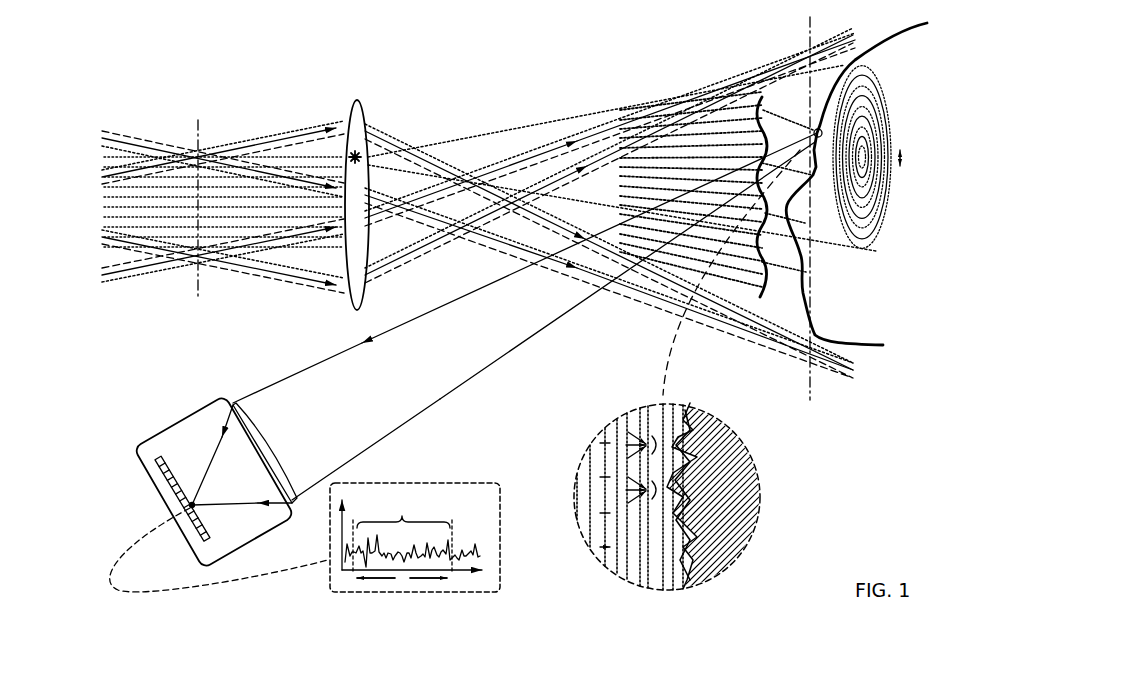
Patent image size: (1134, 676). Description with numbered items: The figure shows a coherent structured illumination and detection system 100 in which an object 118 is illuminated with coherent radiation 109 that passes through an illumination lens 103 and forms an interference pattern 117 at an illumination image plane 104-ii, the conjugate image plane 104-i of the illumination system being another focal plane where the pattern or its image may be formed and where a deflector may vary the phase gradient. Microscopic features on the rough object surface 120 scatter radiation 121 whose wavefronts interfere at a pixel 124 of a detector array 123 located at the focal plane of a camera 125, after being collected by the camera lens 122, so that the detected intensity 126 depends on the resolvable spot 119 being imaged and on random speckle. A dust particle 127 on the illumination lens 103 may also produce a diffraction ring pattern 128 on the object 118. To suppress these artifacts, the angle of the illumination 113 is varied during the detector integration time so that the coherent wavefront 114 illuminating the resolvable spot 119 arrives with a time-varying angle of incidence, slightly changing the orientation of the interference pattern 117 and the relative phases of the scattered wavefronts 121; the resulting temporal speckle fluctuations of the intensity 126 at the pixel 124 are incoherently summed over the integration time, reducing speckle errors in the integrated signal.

The coherent structured illumination and detection system 100 is at (563, 60).
The illumination lens 103 is at (355, 100).
The conjugate image plane 104-i is at (198, 300).
The illumination image plane 104-ii is at (810, 400).
The coherent radiation 109 is at (132, 142).
The angle of the illumination 113 is at (734, 100).
The coherent wavefront 114 is at (594, 443).
The interference pattern 117 is at (765, 280).
The object 118 is at (863, 317).
The resolvable spot 119 is at (815, 130).
The object surface 120 is at (927, 23).
The scattered radiation 121 is at (440, 400).
The camera lens 122 is at (233, 402).
The detector array 123 is at (163, 450).
The pixel 124 is at (197, 504).
The camera 125 is at (210, 395).
The incident intensity 126 is at (473, 547).
The dust particle 127 is at (356, 150).
The diffraction ring pattern 128 is at (883, 87).